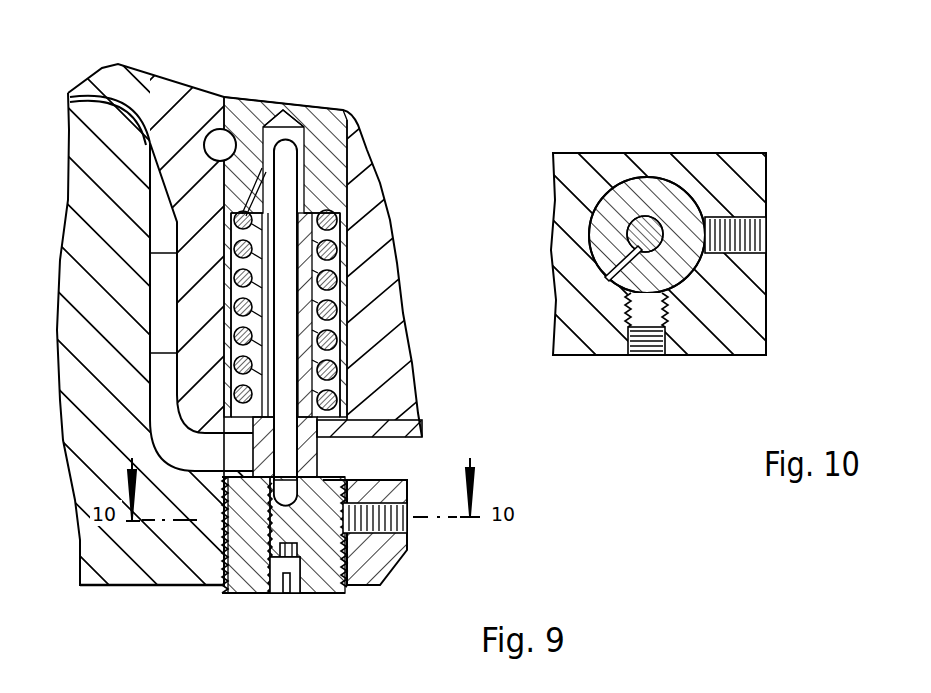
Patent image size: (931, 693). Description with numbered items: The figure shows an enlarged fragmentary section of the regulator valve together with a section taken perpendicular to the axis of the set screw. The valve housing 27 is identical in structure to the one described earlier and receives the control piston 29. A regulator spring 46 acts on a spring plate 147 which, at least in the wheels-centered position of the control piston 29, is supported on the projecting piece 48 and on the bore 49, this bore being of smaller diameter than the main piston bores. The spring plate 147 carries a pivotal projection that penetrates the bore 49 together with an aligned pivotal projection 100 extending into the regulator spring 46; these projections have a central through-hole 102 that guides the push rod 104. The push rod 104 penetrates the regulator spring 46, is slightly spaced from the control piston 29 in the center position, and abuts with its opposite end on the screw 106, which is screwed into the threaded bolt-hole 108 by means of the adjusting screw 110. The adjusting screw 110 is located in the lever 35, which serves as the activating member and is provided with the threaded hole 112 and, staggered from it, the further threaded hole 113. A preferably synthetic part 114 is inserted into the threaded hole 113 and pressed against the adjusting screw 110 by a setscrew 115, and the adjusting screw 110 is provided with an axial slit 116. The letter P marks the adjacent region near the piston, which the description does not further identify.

In FIG. 9, the valve housing 27 is at (183, 118).
In FIG. 9, the pressure port ball P is at (228, 137).
In FIG. 9, the control piston 29 is at (318, 150).
In FIG. 9, the push rod 104 is at (288, 208).
In FIG. 9, the regulator spring 46 is at (333, 220).
In FIG. 9, the pivotal projection 100 is at (327, 300).
In FIG. 9, the central through-hole 102 is at (347, 340).
In FIG. 9, the spring plate 147 is at (347, 403).
In FIG. 9, the bore 49 is at (422, 422).
In FIG. 9, the lever 35 is at (143, 550).
In FIG. 9, the projecting piece 48 is at (236, 447).
In FIG. 9, the screw 106 is at (267, 595).
In FIG. 10, the screw 106 is at (640, 217).
In FIG. 9, the threaded bolt-hole 108 is at (328, 595).
In FIG. 9, the adjusting screw 110 is at (337, 557).
In FIG. 10, the adjusting screw 110 is at (682, 207).
In FIG. 10, the threaded hole 112 is at (760, 220).
In FIG. 10, the threaded hole 113 is at (667, 340).
In FIG. 10, the synthetic part 114 is at (665, 307).
In FIG. 10, the setscrew 115 is at (658, 353).
In FIG. 10, the axial slit 116 is at (622, 297).